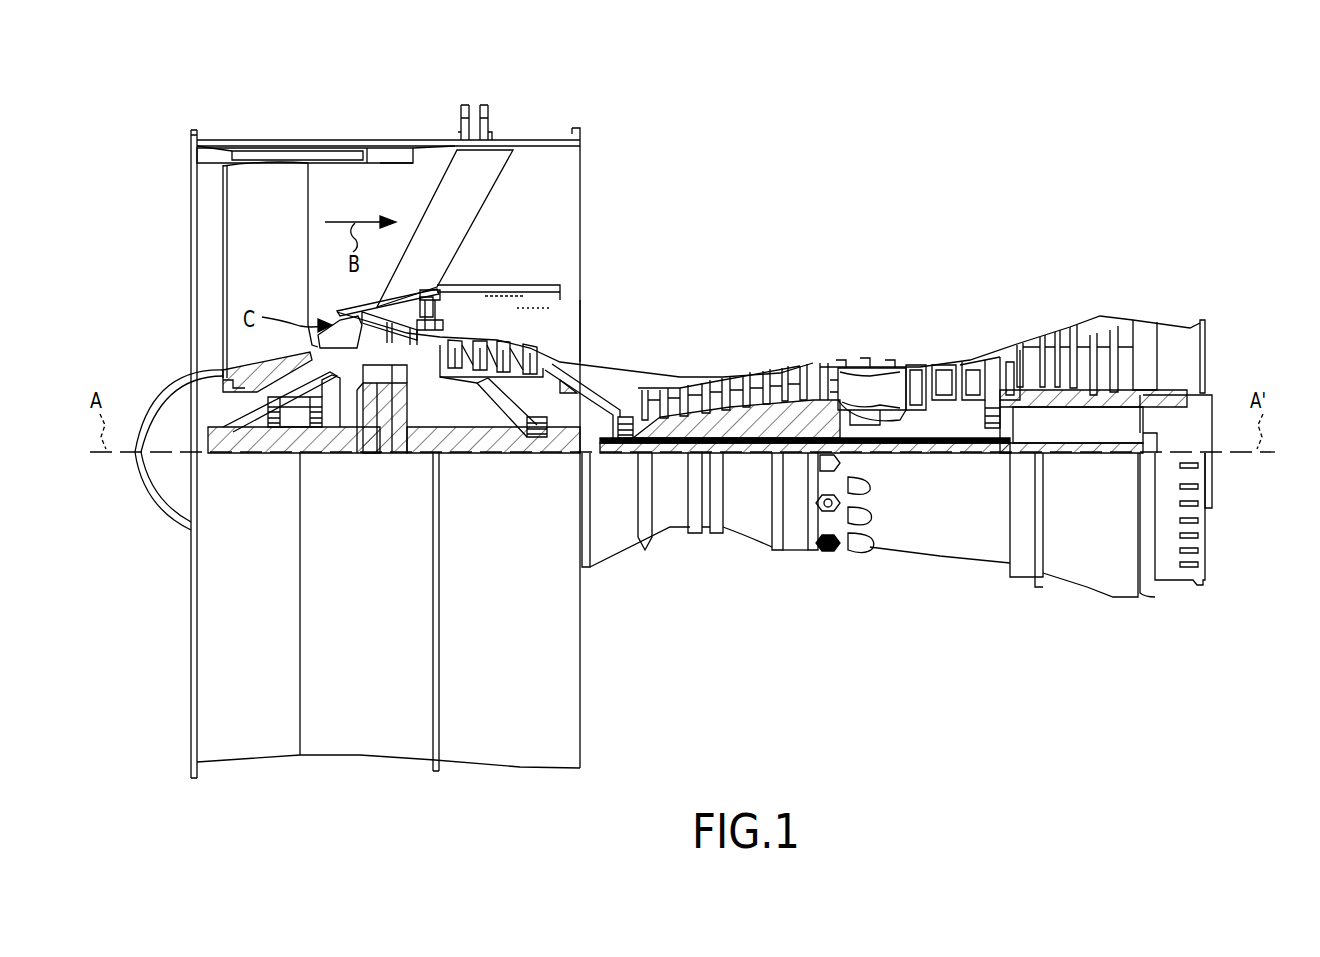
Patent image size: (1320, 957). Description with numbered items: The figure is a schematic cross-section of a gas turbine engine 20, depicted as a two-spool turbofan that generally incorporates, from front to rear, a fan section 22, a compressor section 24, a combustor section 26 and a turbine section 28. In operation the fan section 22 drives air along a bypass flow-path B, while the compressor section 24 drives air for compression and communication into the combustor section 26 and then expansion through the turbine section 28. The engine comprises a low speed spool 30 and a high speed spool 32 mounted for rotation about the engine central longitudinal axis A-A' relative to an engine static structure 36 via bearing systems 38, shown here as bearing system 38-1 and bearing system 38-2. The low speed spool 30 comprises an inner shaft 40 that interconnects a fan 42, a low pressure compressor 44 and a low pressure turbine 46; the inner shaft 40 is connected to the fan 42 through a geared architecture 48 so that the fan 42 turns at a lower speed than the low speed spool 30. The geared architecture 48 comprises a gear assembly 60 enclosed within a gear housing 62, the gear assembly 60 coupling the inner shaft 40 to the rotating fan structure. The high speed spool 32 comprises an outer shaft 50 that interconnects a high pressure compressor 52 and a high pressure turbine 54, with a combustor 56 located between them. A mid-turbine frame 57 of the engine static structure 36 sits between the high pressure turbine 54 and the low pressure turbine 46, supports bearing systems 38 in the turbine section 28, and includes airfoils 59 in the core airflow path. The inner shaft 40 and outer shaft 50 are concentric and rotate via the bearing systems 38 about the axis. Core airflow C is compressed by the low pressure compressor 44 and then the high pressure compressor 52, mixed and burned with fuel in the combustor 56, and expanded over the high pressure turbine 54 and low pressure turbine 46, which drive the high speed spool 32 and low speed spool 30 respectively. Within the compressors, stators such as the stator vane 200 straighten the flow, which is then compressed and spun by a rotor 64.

The gas turbine engine 20 is at (930, 180).
The fan section 22 is at (430, 117).
The compressor section 24 is at (440, 252).
The combustor section 26 is at (925, 252).
The turbine section 28 is at (1147, 252).
The low speed spool 30 is at (752, 478).
The high speed spool 32 is at (790, 420).
The engine static structure 36 is at (180, 766).
The bearing system 38 is at (982, 455).
The bearing system 38-1 is at (276, 430).
The bearing system 38-2 is at (533, 440).
The inner shaft 40 is at (600, 457).
The fan 42 is at (265, 270).
The low pressure compressor section 44 is at (545, 352).
The low pressure turbine section 46 is at (1078, 335).
The geared architecture 48 is at (396, 462).
The outer shaft 50 is at (855, 442).
The high pressure compressor 52 is at (742, 380).
The high pressure turbine section 54 is at (917, 366).
The combustor 56 is at (878, 392).
The mid-turbine frame 57 is at (985, 360).
The airfoils 59 is at (1005, 358).
The gear assembly 60 is at (404, 425).
The gear housing 62 is at (400, 393).
The rotor 64 is at (550, 372).
The stator vane 200 is at (945, 376).